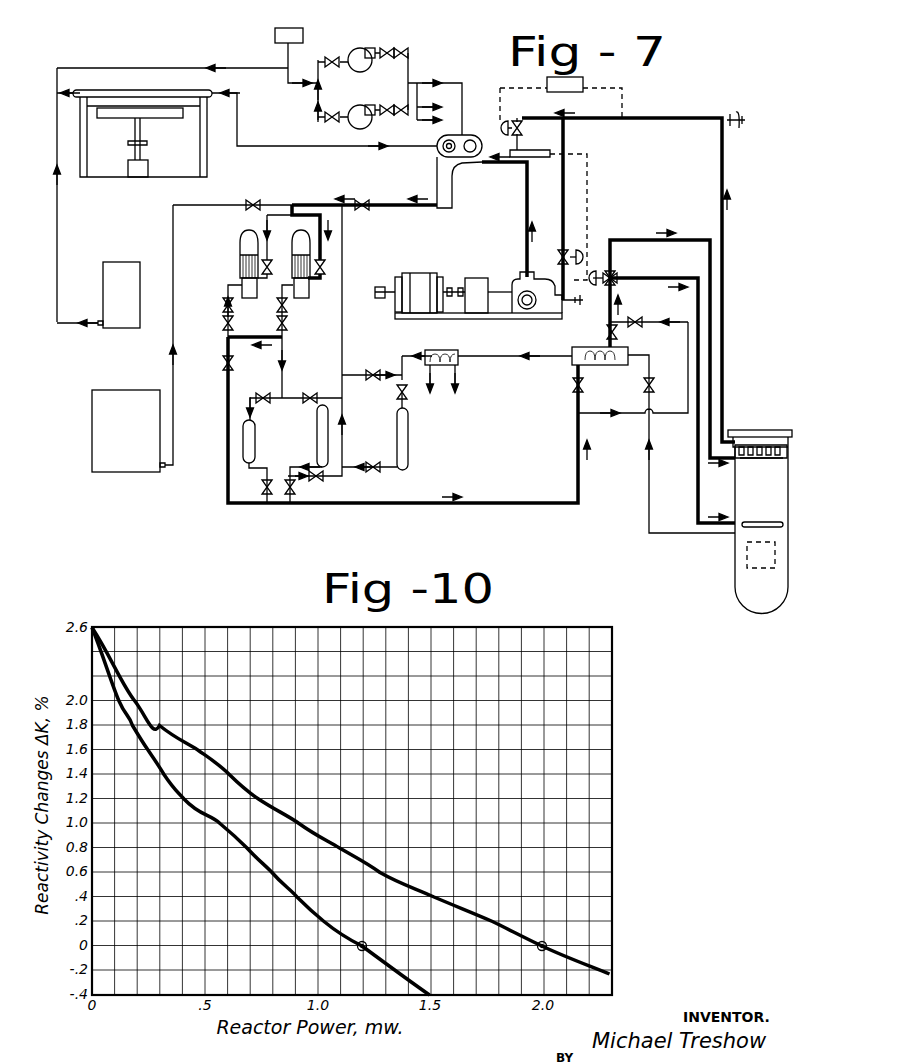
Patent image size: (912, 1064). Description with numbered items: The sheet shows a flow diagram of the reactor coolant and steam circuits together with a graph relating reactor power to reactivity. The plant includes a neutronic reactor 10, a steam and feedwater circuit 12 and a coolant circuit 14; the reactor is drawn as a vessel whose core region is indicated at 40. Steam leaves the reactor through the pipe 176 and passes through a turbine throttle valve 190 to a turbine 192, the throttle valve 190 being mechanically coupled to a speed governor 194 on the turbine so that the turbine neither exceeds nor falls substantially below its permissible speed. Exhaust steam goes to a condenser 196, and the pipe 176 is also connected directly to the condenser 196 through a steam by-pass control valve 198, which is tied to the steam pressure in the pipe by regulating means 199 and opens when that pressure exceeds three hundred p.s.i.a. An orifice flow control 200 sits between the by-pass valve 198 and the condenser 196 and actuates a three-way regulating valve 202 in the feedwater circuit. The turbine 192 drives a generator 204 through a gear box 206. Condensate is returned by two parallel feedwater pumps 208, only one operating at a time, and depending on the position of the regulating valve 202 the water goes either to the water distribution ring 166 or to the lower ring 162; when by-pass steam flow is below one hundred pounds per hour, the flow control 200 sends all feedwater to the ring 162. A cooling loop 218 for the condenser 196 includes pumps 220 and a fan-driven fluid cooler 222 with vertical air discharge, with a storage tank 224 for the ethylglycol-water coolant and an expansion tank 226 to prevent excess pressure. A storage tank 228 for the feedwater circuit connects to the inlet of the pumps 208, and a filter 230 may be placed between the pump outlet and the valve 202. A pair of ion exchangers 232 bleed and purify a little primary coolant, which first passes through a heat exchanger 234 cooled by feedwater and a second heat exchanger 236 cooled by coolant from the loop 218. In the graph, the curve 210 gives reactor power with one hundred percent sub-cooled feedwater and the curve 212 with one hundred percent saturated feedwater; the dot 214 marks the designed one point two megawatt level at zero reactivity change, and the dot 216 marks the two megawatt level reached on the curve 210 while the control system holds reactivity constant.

In FIG. 7, the neutronic reactor 10 is at (727, 559).
In FIG. 7, the steam and feedwater circuit 12 is at (331, 512).
In FIG. 7, the coolant circuit 14 is at (170, 62).
In FIG. 7, the reactor core 40 is at (770, 563).
In FIG. 7, the ring 162 is at (752, 522).
In FIG. 7, the water distribution ring 166 is at (775, 459).
In FIG. 7, the pipe 176 is at (724, 294).
In FIG. 7, the turbine throttle valve 190 is at (570, 252).
In FIG. 7, the turbine 192 is at (548, 318).
In FIG. 7, the speed governor 194 is at (570, 305).
In FIG. 7, the condenser 196 is at (437, 165).
In FIG. 7, the steam by-pass control valve 198 is at (516, 122).
In FIG. 7, the regulating means 199 is at (587, 82).
In FIG. 7, the orifice flow control 200 is at (528, 150).
In FIG. 7, the three-way regulating valve 202 is at (618, 274).
In FIG. 7, the generator 204 is at (413, 278).
In FIG. 7, the gear box 206 is at (473, 279).
In FIG. 7, the feedwater pumps 208 is at (240, 243).
In FIG. 10, the curve 210 is at (335, 846).
In FIG. 10, the curve 212 is at (300, 906).
In FIG. 10, the dot 214 is at (362, 950).
In FIG. 10, the dot 216 is at (547, 943).
In FIG. 7, the cooling loop 218 is at (291, 125).
In FIG. 7, the pumps 220 is at (357, 72).
In FIG. 7, the fluid cooler 222 is at (160, 118).
In FIG. 7, the storage tank 224 is at (118, 272).
In FIG. 7, the expansion tank 226 is at (275, 35).
In FIG. 7, the storage tank 228 is at (140, 473).
In FIG. 7, the filter 230 is at (255, 432).
In FIG. 7, the ion exchangers 232 is at (317, 440).
In FIG. 7, the heat exchanger 234 is at (608, 365).
In FIG. 7, the second heat exchanger 236 is at (443, 350).